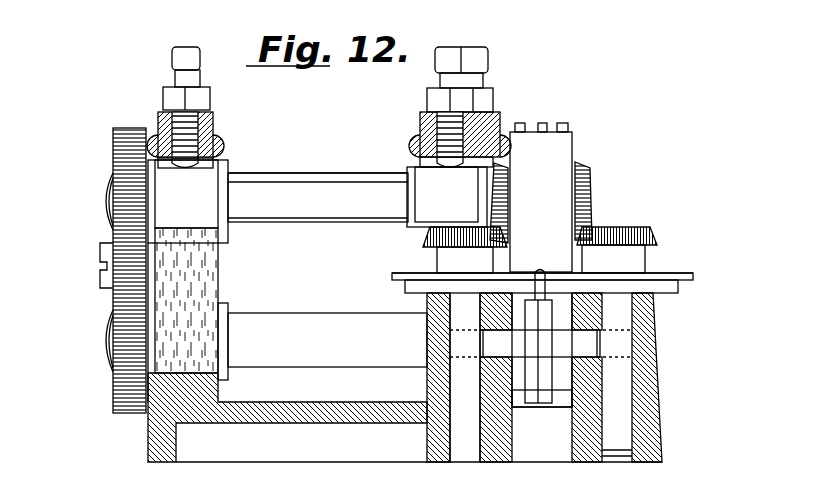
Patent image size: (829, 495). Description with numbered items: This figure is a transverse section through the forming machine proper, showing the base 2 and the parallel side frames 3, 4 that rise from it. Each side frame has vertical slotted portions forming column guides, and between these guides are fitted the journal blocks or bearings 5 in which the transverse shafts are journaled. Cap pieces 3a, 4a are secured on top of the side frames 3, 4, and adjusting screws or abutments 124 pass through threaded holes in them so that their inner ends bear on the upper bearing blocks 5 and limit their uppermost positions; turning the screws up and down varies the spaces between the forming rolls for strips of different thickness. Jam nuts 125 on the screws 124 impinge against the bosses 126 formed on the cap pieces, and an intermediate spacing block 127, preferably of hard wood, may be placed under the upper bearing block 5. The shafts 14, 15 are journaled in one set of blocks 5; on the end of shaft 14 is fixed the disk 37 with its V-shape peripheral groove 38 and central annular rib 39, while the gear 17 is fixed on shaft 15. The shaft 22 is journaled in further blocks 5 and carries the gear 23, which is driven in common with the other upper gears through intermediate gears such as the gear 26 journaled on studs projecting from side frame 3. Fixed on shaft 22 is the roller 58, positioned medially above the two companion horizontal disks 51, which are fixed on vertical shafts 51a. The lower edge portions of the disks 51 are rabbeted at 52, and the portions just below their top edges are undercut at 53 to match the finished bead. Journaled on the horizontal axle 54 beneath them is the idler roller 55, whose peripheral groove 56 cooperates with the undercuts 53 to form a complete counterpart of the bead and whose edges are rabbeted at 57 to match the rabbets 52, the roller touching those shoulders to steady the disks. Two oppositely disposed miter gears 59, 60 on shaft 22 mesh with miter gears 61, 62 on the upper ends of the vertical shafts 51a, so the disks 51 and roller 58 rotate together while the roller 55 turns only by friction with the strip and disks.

The base 2 is at (300, 412).
The side frame 3 is at (217, 163).
The cap piece 3a is at (213, 143).
The side frame 4 is at (430, 162).
The cap piece 4a is at (415, 145).
The journal block 5 is at (317, 201).
The shaft 14 is at (290, 177).
The shaft 15 is at (327, 340).
The gear 17 is at (128, 358).
The shaft 22 is at (318, 197).
The gear 23 is at (130, 197).
The intermediate gear 26 is at (128, 290).
The disk 37 is at (562, 127).
The peripheral groove 38 is at (533, 127).
The annular rib 39 is at (557, 111).
The horizontal disk 51 is at (680, 258).
The vertical shaft 51a is at (460, 370).
The rabbeted portion 52 is at (410, 291).
The undercut portion 53 is at (403, 277).
The axle 54 is at (583, 333).
The roller 55 is at (552, 371).
The peripheral groove 56 is at (538, 302).
The annular groove 57 is at (565, 393).
The roller 58 is at (541, 202).
The miter gear 59 is at (498, 182).
The miter gear 60 is at (590, 200).
The miter gear 61 is at (440, 228).
The miter gear 62 is at (618, 230).
The adjusting screw 124 is at (160, 123).
The jam nut 125 is at (173, 97).
The boss 126 is at (200, 117).
The spacing block 127 is at (208, 285).